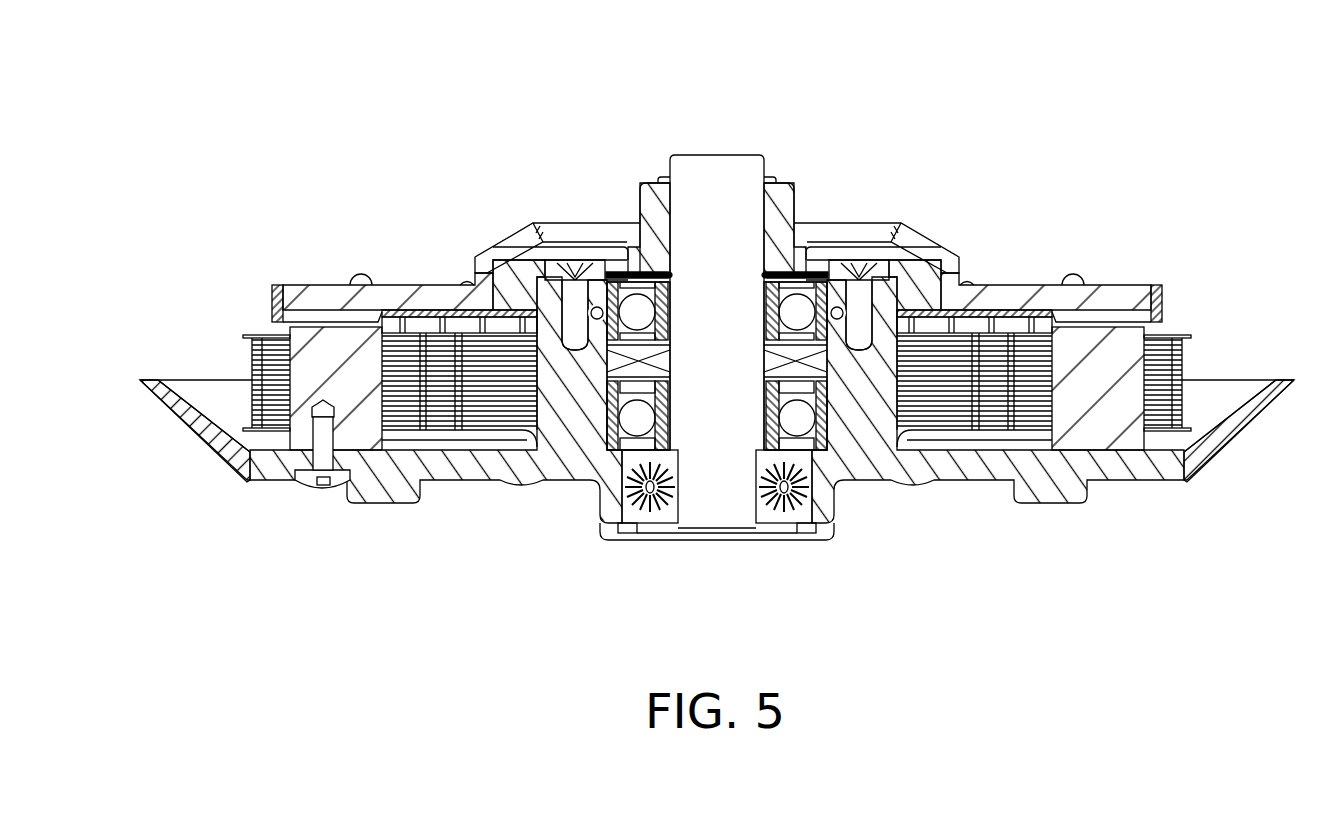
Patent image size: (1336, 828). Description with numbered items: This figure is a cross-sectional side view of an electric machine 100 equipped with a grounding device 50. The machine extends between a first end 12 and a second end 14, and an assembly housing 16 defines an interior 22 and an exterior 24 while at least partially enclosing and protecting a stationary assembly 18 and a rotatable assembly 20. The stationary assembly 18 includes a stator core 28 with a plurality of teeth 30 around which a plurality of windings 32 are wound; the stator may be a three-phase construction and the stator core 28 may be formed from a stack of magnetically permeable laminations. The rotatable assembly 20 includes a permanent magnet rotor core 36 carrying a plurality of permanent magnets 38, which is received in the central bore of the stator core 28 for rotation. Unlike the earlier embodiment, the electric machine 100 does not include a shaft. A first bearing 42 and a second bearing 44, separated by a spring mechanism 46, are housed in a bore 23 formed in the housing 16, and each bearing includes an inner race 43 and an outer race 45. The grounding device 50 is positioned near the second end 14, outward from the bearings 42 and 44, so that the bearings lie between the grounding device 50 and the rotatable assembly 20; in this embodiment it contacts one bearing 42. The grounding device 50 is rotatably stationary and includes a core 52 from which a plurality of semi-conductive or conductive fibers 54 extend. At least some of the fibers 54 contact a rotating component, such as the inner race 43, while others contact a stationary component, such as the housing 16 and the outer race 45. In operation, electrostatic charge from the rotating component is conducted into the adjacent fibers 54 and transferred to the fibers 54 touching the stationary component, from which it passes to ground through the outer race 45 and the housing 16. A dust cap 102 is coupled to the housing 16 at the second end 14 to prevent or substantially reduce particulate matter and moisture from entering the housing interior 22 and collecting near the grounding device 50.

The electric machine 100 is at (272, 140).
The first end 12 is at (608, 140).
The second end 14 is at (496, 557).
The assembly housing 16 is at (1237, 428).
The stationary assembly 18 is at (1226, 372).
The rotatable assembly 20 is at (1163, 272).
The interior 22 is at (885, 420).
The bore 23 is at (845, 418).
The exterior 24 is at (192, 432).
The stator core 28 is at (287, 312).
The teeth 30 is at (318, 350).
The windings 32 is at (268, 404).
The permanent magnet rotor core 36 is at (405, 290).
The permanent magnets 38 is at (1090, 306).
The first bearing 42 is at (616, 270).
The inner race 43 is at (772, 287).
The second bearing 44 is at (607, 450).
The outer race 45 is at (820, 297).
The spring mechanism 46 is at (607, 373).
The grounding device 50 is at (654, 538).
The core 52 is at (658, 556).
The fibers 54 is at (780, 522).
The dust cap 102 is at (790, 548).